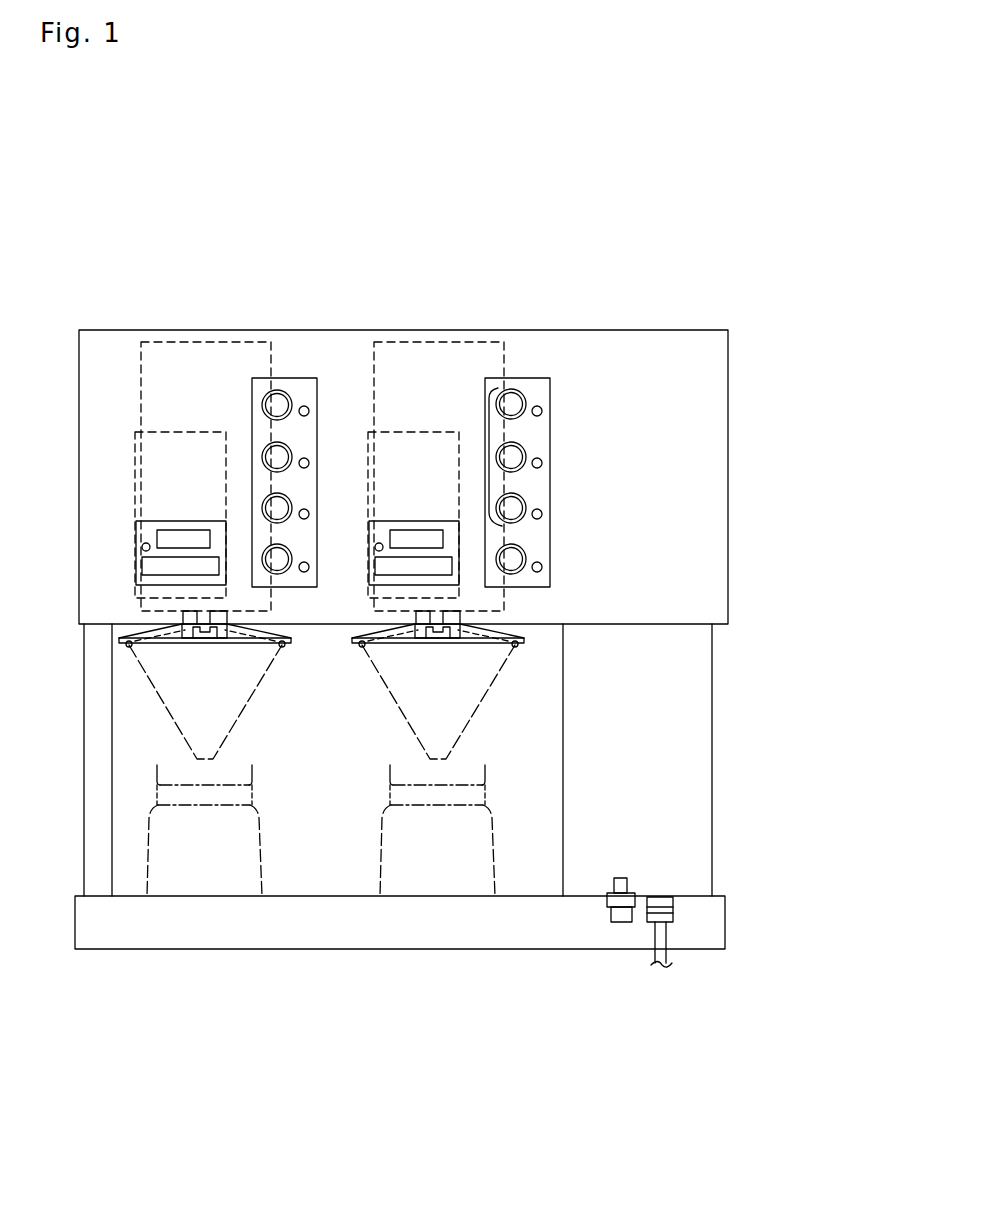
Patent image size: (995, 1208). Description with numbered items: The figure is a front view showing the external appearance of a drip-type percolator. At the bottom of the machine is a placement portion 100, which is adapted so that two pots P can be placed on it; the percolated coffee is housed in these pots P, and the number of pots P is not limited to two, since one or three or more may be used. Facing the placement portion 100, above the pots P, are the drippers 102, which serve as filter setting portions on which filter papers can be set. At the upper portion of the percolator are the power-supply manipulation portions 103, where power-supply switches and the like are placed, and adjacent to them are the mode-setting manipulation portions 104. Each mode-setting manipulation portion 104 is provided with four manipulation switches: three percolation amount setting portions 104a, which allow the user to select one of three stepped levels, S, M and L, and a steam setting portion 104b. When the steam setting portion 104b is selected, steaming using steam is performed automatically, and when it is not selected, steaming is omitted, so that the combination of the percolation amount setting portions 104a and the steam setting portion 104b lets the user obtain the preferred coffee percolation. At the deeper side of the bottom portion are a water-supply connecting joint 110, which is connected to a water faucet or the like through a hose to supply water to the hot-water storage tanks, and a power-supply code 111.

The placement portion 100 is at (433, 896).
The dripper 102 is at (403, 716).
The power-supply manipulation portion 103 is at (178, 515).
The mode-setting manipulation portion 104 is at (574, 477).
The percolation amount setting portion 104a is at (552, 432).
The steam setting portion 104b is at (517, 577).
The water-supply connecting joint 110 is at (622, 877).
The power-supply code 111 is at (658, 897).
The pot P is at (381, 848).